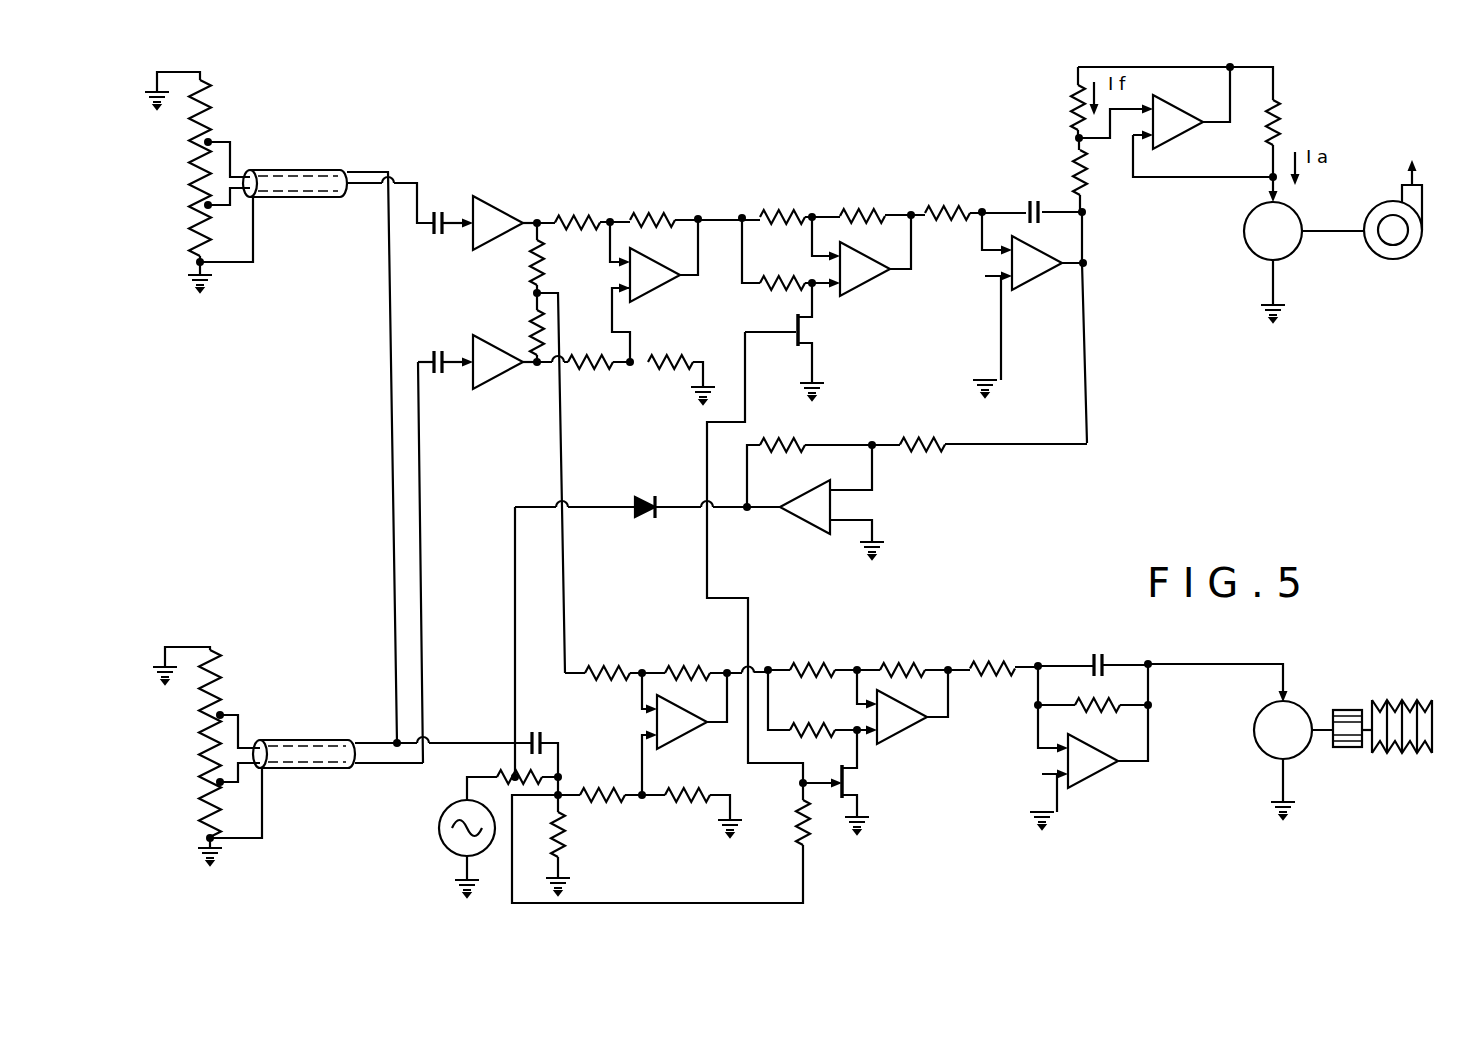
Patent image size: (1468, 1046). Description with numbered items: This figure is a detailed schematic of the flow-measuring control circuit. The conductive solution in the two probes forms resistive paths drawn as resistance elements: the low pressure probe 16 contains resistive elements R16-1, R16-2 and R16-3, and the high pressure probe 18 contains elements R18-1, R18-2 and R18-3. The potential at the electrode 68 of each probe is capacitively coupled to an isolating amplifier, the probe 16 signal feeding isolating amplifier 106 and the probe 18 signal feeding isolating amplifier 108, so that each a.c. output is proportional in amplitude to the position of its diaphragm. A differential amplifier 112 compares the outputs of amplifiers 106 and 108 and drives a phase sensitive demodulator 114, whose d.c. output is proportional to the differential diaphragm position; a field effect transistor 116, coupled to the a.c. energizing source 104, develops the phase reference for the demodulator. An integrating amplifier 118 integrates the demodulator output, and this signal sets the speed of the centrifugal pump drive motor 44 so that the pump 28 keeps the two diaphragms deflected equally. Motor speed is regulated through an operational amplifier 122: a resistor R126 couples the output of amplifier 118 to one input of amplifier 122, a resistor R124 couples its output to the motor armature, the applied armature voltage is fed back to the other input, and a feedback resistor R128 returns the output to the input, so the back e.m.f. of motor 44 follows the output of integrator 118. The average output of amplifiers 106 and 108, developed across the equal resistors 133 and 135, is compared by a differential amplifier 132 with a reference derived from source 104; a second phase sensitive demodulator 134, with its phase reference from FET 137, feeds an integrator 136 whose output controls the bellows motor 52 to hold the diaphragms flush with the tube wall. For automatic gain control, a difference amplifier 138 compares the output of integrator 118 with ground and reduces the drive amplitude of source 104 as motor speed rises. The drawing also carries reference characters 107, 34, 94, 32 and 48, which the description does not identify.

The ground connection 107 is at (158, 105).
The resistance element R18-2 is at (212, 118).
The resistance element R18-1 is at (190, 182).
The resistance element R18-3 is at (190, 222).
The electrode 68 is at (212, 208).
The high pressure probe 18 is at (312, 168).
The conductor 34 is at (408, 183).
The isolating amplifier 108 is at (500, 210).
The resistor 133 is at (545, 265).
The resistor 135 is at (532, 326).
The isolating amplifier 106 is at (496, 385).
The differential amplifier 112 is at (652, 292).
The phase sensitive demodulator 114 is at (862, 290).
The field effect transistor 116 is at (812, 332).
The integrating amplifier 118 is at (1032, 290).
The feedback resistor R128 is at (1072, 110).
The resistor R126 is at (1088, 195).
The operational amplifier 122 is at (1178, 108).
The resistor R124 is at (1280, 120).
The centrifugal pump drive motor 44 is at (1295, 257).
The centrifugal pump 28 is at (1415, 256).
The difference amplifier 138 is at (815, 530).
The resistance element R16-2 is at (222, 695).
The resistance element R16-1 is at (205, 750).
The resistance element R16-3 is at (202, 818).
The low pressure probe 16 is at (305, 742).
The junction 94 is at (395, 741).
The conductor 32 is at (425, 692).
The a.c. energizing source 104 is at (437, 835).
The differential amplifier 132 is at (676, 747).
The second phase sensitive demodulator 134 is at (900, 742).
The FET 137 is at (850, 785).
The integrator 136 is at (1096, 785).
The bellows motor 52 is at (1295, 760).
The bellows 48 is at (1408, 757).